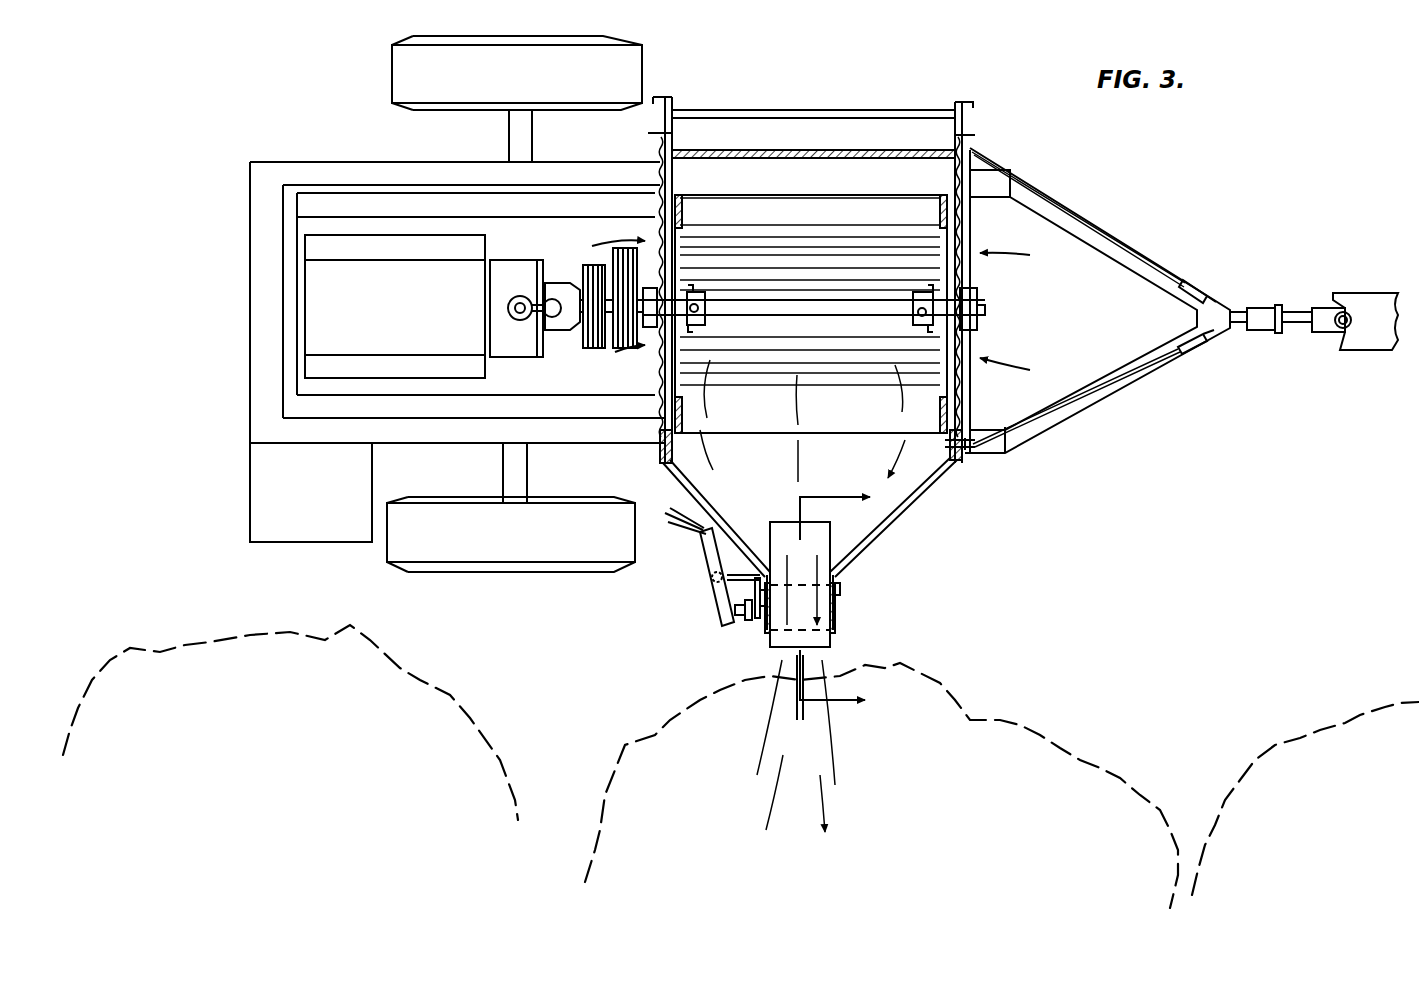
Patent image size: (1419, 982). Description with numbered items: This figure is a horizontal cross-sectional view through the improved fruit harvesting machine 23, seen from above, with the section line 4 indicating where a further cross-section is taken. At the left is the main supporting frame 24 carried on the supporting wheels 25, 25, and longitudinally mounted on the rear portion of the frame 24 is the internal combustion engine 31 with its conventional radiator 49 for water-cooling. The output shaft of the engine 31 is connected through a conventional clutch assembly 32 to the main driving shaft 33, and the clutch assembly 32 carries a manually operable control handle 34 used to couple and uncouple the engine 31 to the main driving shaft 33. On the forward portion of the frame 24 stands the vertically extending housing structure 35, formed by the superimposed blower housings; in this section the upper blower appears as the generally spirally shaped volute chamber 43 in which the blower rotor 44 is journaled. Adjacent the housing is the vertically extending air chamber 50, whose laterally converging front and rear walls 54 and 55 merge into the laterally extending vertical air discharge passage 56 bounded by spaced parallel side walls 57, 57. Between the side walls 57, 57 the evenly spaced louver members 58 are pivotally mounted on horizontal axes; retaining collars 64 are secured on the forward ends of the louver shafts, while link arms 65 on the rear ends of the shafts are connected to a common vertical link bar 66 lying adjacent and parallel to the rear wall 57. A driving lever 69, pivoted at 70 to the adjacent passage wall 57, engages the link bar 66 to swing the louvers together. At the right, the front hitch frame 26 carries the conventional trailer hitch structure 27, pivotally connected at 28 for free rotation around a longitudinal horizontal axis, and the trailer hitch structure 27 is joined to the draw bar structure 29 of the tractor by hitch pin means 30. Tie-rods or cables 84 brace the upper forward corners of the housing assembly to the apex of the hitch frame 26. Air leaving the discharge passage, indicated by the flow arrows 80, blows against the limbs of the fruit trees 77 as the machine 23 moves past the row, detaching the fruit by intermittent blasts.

The section line 4- 4 is at (833, 601).
The fruit harvesting machine 23 is at (953, 88).
The main supporting frame 24 is at (584, 440).
The supporting wheels 25 is at (640, 78).
The front hitch frame 26 is at (1073, 225).
The trailer hitch structure 27 is at (1320, 330).
The pivotal connection 28 is at (1287, 320).
The draw bar structure 29 is at (1370, 343).
The hitch pin means 30 is at (1338, 334).
The internal combustion engine 31 is at (482, 240).
The clutch assembly 32 is at (525, 272).
The main driving shaft 33 is at (583, 330).
The control handle 34 is at (528, 318).
The housing structure 35 is at (975, 122).
The volute chamber 43 is at (725, 152).
The blower rotor 44 is at (780, 240).
The radiator 49 is at (258, 382).
The air chamber 50 is at (958, 472).
The front wall 54 is at (900, 517).
The rear wall 55 is at (693, 482).
The air discharge passage 56 is at (833, 640).
The side walls 57 is at (765, 630).
The louver members 58 is at (818, 542).
The retaining collars 64 is at (840, 592).
The link arms 65 is at (722, 600).
The vertical link bar 66 is at (742, 620).
The driving lever 69 is at (703, 565).
The pivot 70 is at (738, 562).
The fruit trees 77 is at (435, 683).
The screen 80 is at (655, 385).
The tie-rods or cables 84 is at (1148, 255).